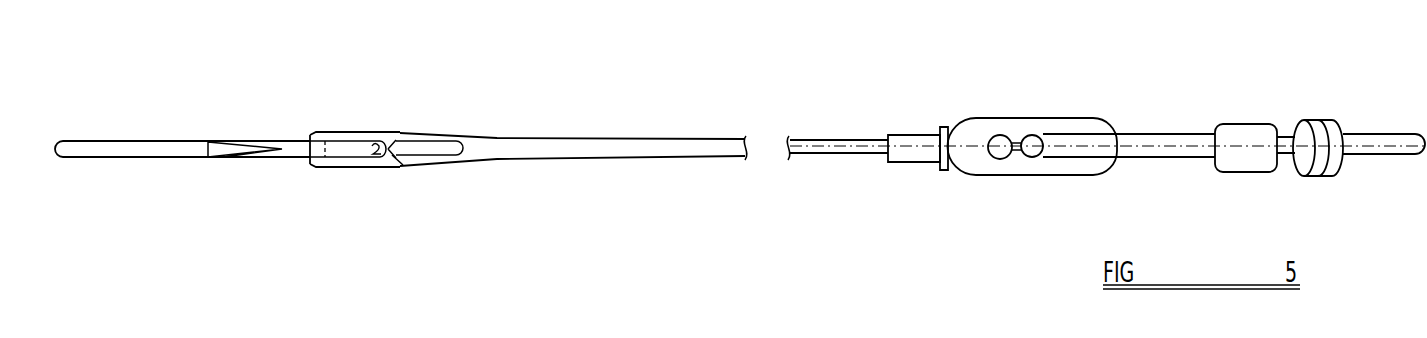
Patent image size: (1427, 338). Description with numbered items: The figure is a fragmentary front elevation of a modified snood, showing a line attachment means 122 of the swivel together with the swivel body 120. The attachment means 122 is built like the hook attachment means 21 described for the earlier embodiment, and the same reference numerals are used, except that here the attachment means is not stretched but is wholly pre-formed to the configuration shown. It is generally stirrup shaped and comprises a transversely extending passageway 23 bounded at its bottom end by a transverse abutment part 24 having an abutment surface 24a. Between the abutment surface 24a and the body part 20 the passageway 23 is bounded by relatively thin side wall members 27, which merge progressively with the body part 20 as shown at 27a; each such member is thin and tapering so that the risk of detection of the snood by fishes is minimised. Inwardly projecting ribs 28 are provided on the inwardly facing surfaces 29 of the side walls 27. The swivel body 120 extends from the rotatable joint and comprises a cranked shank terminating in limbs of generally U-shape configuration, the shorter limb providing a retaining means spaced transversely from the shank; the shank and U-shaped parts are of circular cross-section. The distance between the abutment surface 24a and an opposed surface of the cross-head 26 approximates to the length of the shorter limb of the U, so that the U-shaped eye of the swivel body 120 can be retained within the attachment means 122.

The body part 20 is at (942, 172).
The hook attachment means 21 is at (405, 111).
The passageway 23 is at (397, 140).
The transverse abutment part 24 is at (345, 132).
The abutment surface 24a is at (357, 172).
The cross-head 26 is at (967, 118).
The side wall member 27 is at (413, 133).
The merging portion of side wall member 27a is at (487, 140).
The inwardly projecting ribs 28 is at (385, 138).
The inwardly facing surface 29 is at (995, 137).
The body 120 is at (1152, 160).
The line attachment means 122 is at (955, 176).